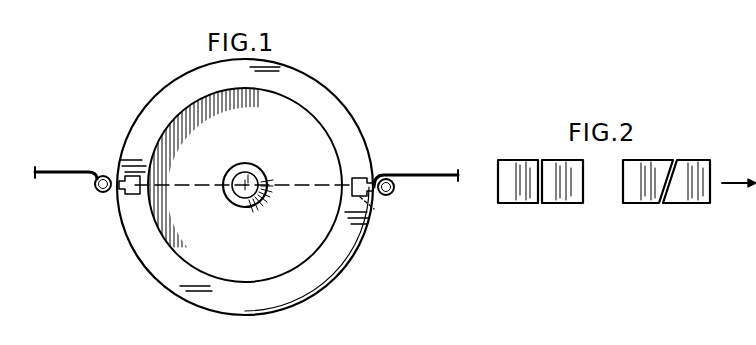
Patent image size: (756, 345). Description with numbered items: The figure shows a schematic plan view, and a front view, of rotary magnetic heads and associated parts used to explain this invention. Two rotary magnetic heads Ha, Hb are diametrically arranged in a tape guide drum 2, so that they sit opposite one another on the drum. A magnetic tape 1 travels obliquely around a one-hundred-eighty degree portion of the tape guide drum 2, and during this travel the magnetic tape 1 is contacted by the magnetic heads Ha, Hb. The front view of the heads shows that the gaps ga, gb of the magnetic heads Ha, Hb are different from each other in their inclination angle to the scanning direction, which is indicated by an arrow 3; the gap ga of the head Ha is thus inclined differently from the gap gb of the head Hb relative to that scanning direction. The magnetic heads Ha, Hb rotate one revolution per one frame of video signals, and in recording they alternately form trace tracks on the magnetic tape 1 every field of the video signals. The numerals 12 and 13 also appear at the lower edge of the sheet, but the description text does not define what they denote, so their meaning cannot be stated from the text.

In FIG. 1, the magnetic tape 1 is at (360, 248).
In FIG. 1, the tape guide drum 2 is at (308, 140).
In FIG. 1, the rotary magnetic head Ha is at (120, 195).
In FIG. 2, the rotary magnetic head Ha is at (528, 213).
In FIG. 1, the rotary magnetic head Hb is at (375, 200).
In FIG. 2, the rotary magnetic head Hb is at (650, 212).
In FIG. 2, the gap of magnetic head Ha ga is at (537, 198).
In FIG. 2, the gap of magnetic head Hb gb is at (661, 200).
In FIG. 2, the arrow 3 is at (740, 186).
In FIG. 2, the signal 12 is at (528, 336).
In FIG. 2, the signal 13 is at (675, 336).